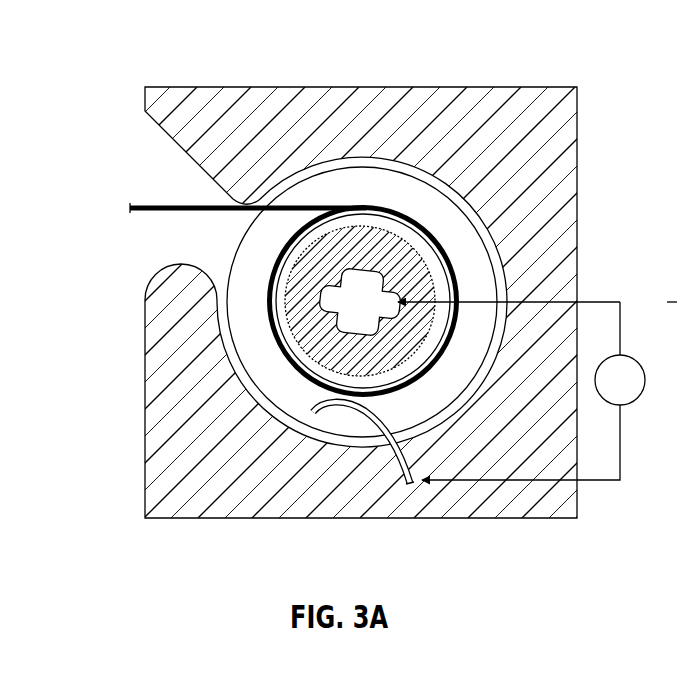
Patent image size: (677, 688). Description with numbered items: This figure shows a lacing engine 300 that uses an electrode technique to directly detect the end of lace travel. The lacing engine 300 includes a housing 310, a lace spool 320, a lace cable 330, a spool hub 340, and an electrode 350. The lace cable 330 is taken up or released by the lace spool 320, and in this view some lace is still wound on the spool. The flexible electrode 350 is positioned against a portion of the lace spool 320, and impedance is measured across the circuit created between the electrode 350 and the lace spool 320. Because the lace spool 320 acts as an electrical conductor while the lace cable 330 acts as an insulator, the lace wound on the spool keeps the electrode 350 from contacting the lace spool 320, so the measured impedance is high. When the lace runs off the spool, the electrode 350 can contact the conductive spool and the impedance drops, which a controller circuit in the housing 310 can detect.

The lacing engine 300 is at (338, 290).
The housing 310 is at (145, 100).
The lace spool 320 is at (226, 262).
The lace cable 330 is at (157, 205).
The spool hub 340 is at (400, 300).
The electrode 350 is at (398, 492).